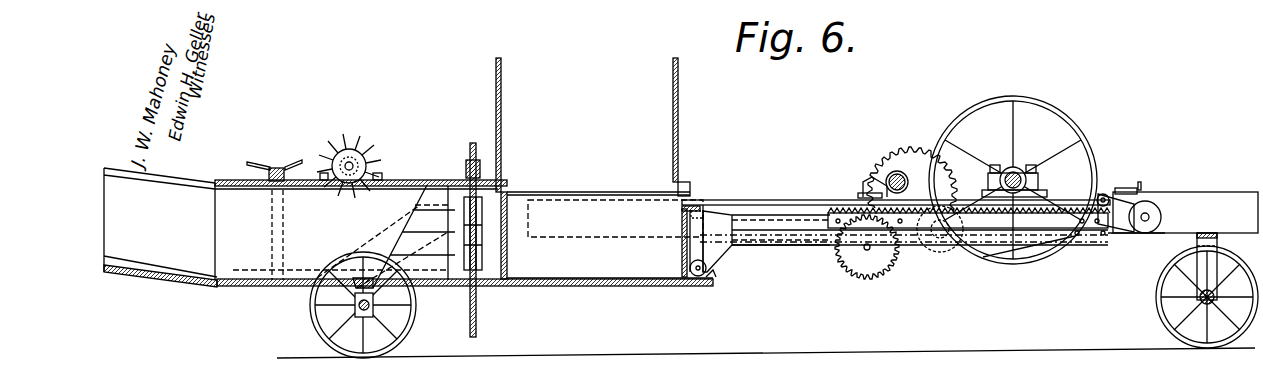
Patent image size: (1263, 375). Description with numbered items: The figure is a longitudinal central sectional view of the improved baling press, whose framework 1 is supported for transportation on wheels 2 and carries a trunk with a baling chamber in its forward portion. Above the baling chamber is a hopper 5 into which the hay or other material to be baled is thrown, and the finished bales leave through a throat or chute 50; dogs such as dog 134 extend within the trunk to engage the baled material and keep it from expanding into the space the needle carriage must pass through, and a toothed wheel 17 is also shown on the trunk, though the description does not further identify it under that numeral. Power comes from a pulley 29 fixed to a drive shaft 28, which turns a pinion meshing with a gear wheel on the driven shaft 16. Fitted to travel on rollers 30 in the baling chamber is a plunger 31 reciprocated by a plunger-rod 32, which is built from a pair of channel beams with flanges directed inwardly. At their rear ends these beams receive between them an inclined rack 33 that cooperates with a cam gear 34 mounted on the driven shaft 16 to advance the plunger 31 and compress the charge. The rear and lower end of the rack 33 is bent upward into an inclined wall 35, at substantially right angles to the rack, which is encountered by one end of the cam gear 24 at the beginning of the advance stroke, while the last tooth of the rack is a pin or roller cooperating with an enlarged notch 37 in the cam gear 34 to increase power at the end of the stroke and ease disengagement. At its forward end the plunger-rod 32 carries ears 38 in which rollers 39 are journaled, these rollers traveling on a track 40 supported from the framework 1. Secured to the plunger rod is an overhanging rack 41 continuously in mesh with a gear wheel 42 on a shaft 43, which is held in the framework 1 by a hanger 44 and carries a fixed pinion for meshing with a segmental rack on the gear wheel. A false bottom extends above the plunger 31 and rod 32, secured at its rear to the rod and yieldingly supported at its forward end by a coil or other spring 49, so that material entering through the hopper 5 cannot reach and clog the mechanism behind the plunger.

The framework 1 is at (1218, 192).
The wheels 2 is at (1209, 349).
The hopper 5 is at (496, 128).
The driven shaft 16 is at (895, 171).
The spiked feed wheel 17 is at (358, 148).
The cam gear 24 is at (617, 272).
The drive shaft 28 is at (1020, 170).
The pulley 29 is at (1067, 113).
The rollers 30 is at (707, 271).
The plunger 31 is at (690, 254).
The plunger-rod 32 is at (798, 233).
The inclined rack 33 is at (983, 258).
The cam gear 34 is at (907, 148).
The inclined wall 35 is at (945, 240).
The enlarged notch 37 is at (866, 180).
The ears 38 is at (1122, 207).
The rollers 39 is at (1150, 202).
The track 40 is at (1138, 237).
The overhanging rack 41 is at (1080, 235).
The gear wheel 42 is at (847, 263).
The shaft 43 is at (868, 250).
The hanger 44 is at (745, 203).
The spring 49 is at (697, 205).
The throat or chute 50 is at (203, 262).
The dog 134 is at (387, 252).